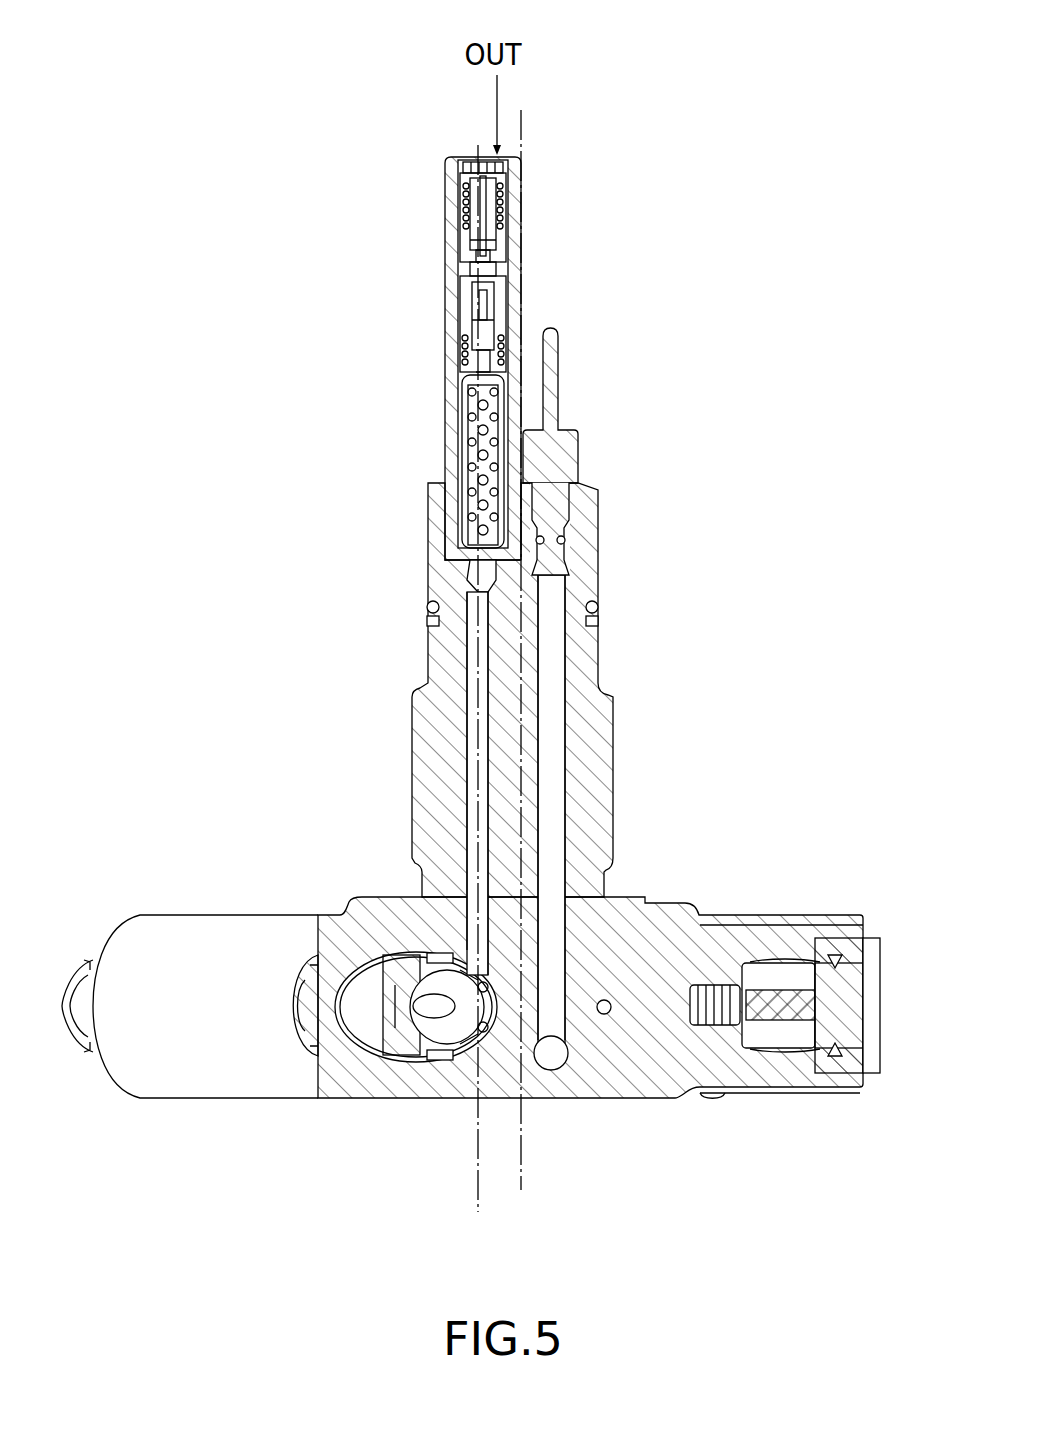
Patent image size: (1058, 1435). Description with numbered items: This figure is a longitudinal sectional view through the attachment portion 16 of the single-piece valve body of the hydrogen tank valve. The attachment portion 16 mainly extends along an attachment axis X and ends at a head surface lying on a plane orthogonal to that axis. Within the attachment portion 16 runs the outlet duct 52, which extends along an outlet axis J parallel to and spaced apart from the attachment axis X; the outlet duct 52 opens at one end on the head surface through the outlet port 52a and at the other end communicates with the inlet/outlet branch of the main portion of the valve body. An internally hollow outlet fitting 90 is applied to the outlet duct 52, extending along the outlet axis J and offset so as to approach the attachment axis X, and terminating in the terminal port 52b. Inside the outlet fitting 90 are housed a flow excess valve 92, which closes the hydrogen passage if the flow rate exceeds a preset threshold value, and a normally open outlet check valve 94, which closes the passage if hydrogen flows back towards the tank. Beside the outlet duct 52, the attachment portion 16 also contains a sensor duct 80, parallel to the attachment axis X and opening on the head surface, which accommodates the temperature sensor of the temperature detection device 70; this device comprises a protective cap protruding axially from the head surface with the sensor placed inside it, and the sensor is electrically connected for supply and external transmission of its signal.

The attachment portion 16 is at (822, 548).
The outlet duct 52 is at (473, 797).
The outlet port 52a is at (460, 443).
The terminal port 52b is at (473, 156).
The temperature detection device 70 is at (600, 458).
The sensor duct 80 is at (551, 760).
The outlet fitting 90 is at (486, 303).
The flow excess valve 92 is at (455, 212).
The outlet check valve 94 is at (455, 316).
The outlet axis J is at (478, 1188).
The attachment axis X is at (520, 1167).